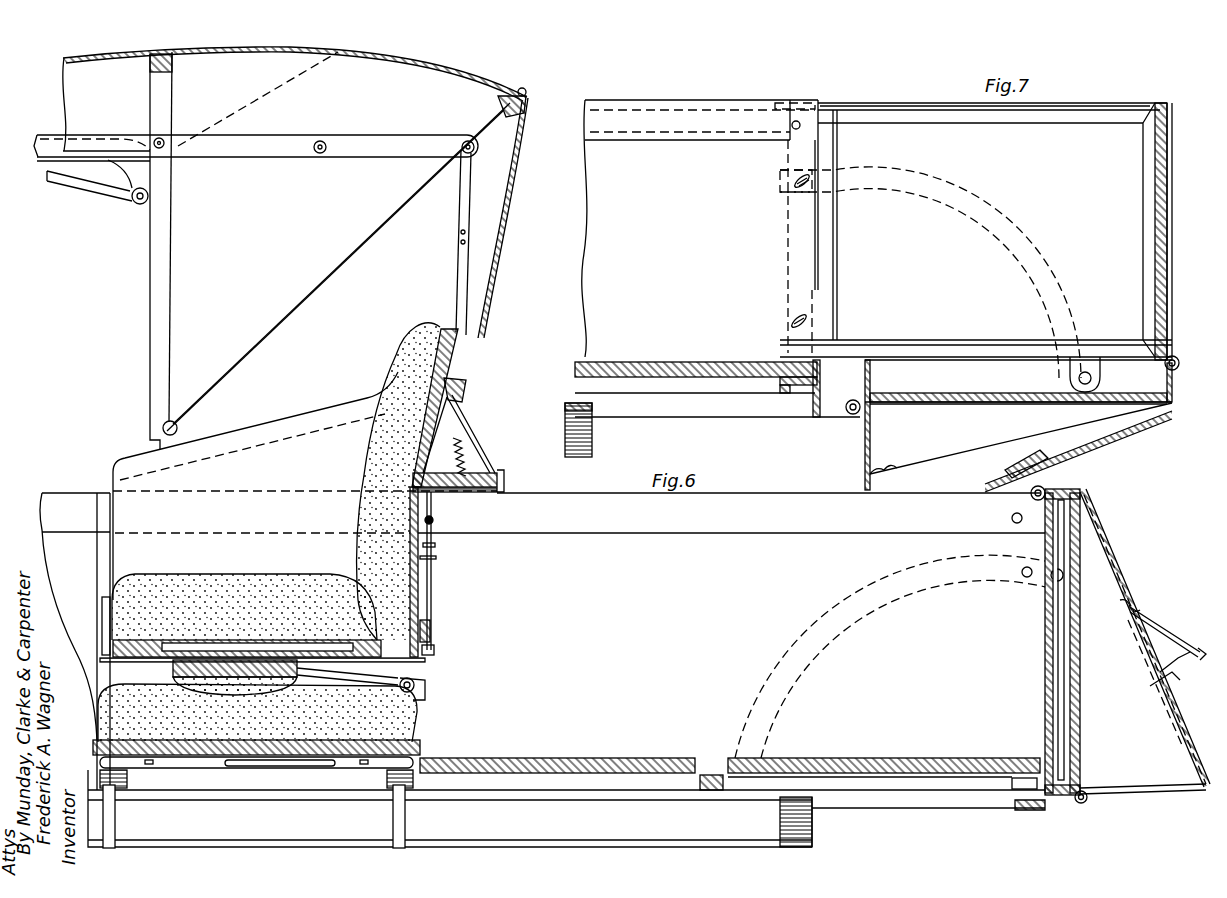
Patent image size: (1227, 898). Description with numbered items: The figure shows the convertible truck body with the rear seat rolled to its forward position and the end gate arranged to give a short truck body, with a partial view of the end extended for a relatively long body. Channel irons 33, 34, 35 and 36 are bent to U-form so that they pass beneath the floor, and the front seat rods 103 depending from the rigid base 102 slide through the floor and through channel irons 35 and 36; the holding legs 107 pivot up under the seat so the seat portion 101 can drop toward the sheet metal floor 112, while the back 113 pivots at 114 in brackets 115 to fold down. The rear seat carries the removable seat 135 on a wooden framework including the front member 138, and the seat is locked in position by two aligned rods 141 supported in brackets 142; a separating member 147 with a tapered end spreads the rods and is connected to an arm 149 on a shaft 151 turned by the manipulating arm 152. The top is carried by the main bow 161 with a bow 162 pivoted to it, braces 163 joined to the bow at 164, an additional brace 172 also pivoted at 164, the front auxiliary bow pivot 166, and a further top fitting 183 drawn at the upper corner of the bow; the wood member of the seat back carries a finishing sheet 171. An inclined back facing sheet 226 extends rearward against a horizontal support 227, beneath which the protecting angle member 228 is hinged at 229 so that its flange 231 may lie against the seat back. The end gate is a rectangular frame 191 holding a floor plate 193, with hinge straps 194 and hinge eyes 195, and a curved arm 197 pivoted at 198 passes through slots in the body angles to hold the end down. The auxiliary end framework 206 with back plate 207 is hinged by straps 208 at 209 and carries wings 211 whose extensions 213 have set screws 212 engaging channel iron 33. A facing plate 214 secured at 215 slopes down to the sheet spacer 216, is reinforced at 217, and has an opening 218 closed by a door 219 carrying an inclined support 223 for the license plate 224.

In FIG. 6, the finishing sheet 171 is at (164, 140).
In FIG. 6, the additional brace 172 is at (357, 148).
In FIG. 6, the pivot 183 is at (527, 92).
In FIG. 6, the brace connection 164 is at (482, 150).
In FIG. 6, the braces 163 is at (470, 198).
In FIG. 6, the pivot of front auxiliary bow 166 is at (138, 204).
In FIG. 6, the main bow 161 is at (170, 253).
In FIG. 6, the bow 162 is at (322, 292).
In FIG. 6, the inclined back facing sheet 226 is at (466, 437).
In FIG. 6, the flange 231 is at (462, 470).
In FIG. 6, the horizontal support 227 is at (452, 497).
In FIG. 6, the hinge 229 is at (472, 498).
In FIG. 6, the protecting angle member 228 is at (579, 512).
In FIG. 6, the manipulating arm 152 is at (110, 598).
In FIG. 6, the removable seat 135 is at (245, 564).
In FIG. 6, the back 113 is at (238, 680).
In FIG. 6, the brackets 142 is at (442, 545).
In FIG. 6, the rods 141 is at (462, 567).
In FIG. 6, the separating member 147 is at (433, 598).
In FIG. 6, the arm 149 is at (432, 640).
In FIG. 6, the shaft 151 is at (432, 655).
In FIG. 6, the seat portion 101 is at (382, 667).
In FIG. 6, the pivot 114 is at (416, 684).
In FIG. 6, the brackets 115 is at (424, 702).
In FIG. 6, the front member 138 is at (257, 699).
In FIG. 6, the rigid base 102 is at (418, 748).
In FIG. 6, the channel iron 35 is at (490, 762).
In FIG. 6, the channel iron 34 is at (712, 775).
In FIG. 6, the channel iron 36 is at (118, 790).
In FIG. 6, the sheet metal floor 112 is at (257, 775).
In FIG. 6, the holding legs 107 is at (355, 775).
In FIG. 6, the rods 103 is at (408, 822).
In FIG. 6, the channel iron 33 is at (1025, 780).
In FIG. 6, the hinge straps 194 is at (1080, 757).
In FIG. 7, the hinge straps 194 is at (942, 398).
In FIG. 6, the rectangular frame 191 is at (1080, 776).
In FIG. 6, the hinge eyes 195 is at (1081, 803).
In FIG. 7, the hinge eyes 195 is at (862, 412).
In FIG. 6, the sheet spacer 216 is at (1140, 792).
In FIG. 6, the top fastening 215 is at (1070, 492).
In FIG. 6, the facing plate 214 is at (1100, 540).
In FIG. 7, the facing plate 214 is at (1122, 426).
In FIG. 6, the opening 218 is at (1133, 603).
In FIG. 6, the inclined support 223 is at (1162, 616).
In FIG. 6, the license plate 224 is at (1200, 648).
In FIG. 6, the door 219 is at (1162, 675).
In FIG. 6, the reinforcement 217 is at (1165, 725).
In FIG. 6, the curved arm 197 is at (850, 624).
In FIG. 7, the curved arm 197 is at (989, 238).
In FIG. 7, the wings 211 is at (1090, 130).
In FIG. 7, the framework 206 is at (1152, 118).
In FIG. 7, the back plate 207 is at (1155, 204).
In FIG. 7, the hinge straps 208 is at (1175, 255).
In FIG. 7, the set screws 212 is at (812, 185).
In FIG. 7, the extensions 213 is at (812, 330).
In FIG. 7, the floor plate 193 is at (935, 397).
In FIG. 7, the pivot 198 is at (1077, 378).
In FIG. 7, the hinge 209 is at (1167, 368).